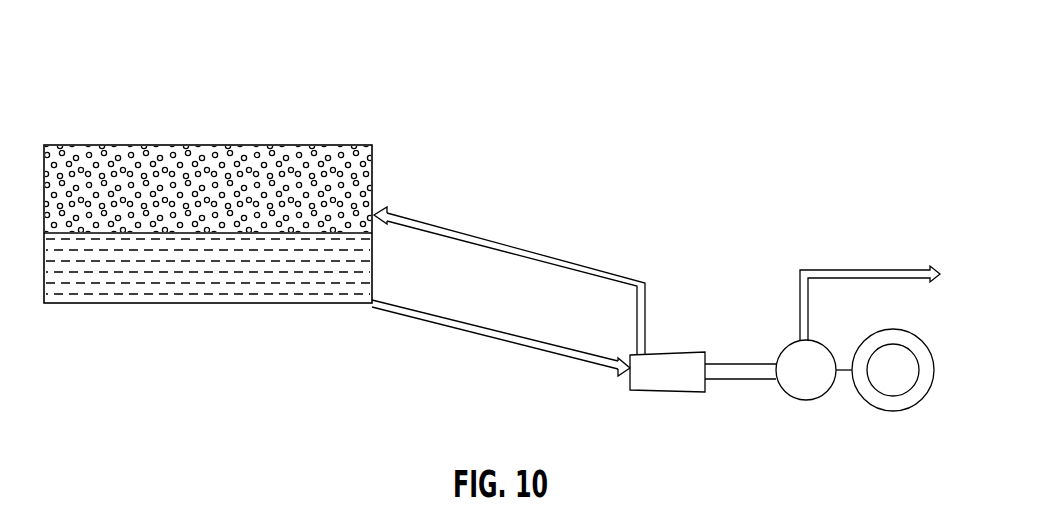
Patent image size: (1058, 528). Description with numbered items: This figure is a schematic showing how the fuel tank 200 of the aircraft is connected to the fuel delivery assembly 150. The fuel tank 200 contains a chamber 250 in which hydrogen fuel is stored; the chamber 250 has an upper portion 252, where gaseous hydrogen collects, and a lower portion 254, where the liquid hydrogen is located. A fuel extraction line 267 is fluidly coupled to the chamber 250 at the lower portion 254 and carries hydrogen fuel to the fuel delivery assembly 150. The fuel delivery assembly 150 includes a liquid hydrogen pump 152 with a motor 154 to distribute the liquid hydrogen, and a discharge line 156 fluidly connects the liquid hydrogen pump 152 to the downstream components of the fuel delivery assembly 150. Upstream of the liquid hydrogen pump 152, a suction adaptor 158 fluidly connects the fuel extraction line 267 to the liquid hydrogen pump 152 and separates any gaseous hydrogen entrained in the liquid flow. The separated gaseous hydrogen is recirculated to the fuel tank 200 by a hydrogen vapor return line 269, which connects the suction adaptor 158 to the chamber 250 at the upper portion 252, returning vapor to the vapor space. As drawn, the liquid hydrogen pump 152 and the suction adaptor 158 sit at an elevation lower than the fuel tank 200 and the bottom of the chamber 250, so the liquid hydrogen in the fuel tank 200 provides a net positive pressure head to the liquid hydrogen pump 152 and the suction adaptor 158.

The fuel delivery assembly 150 is at (841, 150).
The liquid hydrogen pump 152 is at (810, 400).
The motor 154 is at (895, 409).
The discharge line 156 is at (868, 270).
The suction adaptor 158 is at (675, 377).
The fuel tank 200 is at (84, 145).
The chamber 250 is at (208, 234).
The upper portion 252 is at (302, 188).
The lower portion 254 is at (305, 282).
The fuel extraction line 267 is at (538, 342).
The hydrogen vapor return line 269 is at (540, 257).